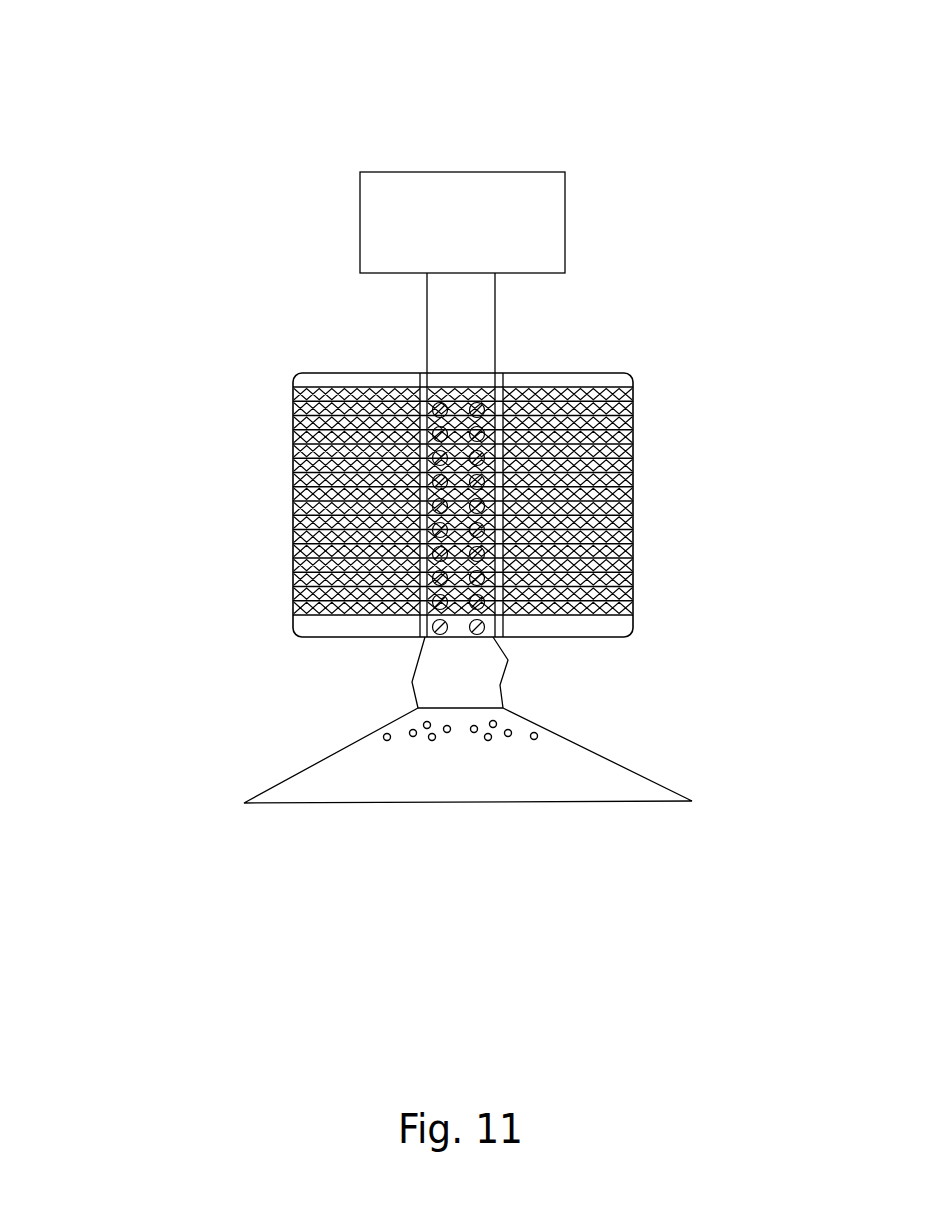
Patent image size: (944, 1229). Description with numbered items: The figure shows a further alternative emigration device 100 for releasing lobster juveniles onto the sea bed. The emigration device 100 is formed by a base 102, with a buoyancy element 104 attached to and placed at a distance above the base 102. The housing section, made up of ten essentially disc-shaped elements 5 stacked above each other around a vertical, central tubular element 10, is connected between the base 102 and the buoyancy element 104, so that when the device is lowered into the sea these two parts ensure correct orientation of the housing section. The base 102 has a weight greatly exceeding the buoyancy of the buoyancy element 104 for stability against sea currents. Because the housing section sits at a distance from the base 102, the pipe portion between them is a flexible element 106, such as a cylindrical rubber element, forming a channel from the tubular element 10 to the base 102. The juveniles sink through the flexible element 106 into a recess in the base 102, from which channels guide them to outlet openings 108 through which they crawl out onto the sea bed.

The buoyancy element 104 is at (505, 203).
The tubular element 10 is at (455, 327).
The disc-shaped elements 5 is at (230, 502).
The flexible element 106 is at (468, 675).
The outlet openings 108 is at (512, 731).
The emigration device 100 is at (414, 804).
The base 102 is at (367, 772).